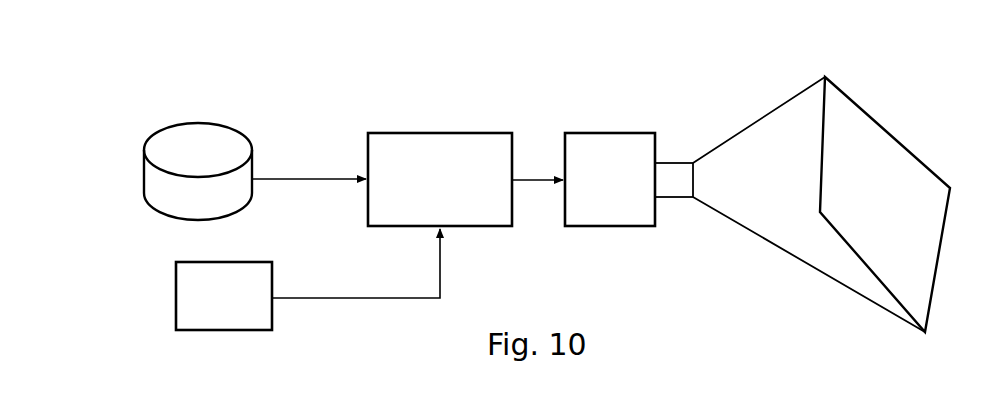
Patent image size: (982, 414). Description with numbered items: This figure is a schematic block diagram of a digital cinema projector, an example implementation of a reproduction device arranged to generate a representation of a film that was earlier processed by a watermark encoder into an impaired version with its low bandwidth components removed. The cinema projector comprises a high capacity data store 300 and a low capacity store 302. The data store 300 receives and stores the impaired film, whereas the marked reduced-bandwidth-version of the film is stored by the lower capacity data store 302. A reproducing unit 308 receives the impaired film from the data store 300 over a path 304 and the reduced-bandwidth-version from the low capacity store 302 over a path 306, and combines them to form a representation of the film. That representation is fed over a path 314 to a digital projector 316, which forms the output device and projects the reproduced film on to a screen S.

The high capacity data store 300 is at (198, 123).
The low capacity store 302 is at (225, 262).
The data signal path 304 is at (273, 178).
The control signal path 306 is at (340, 298).
The reproducing unit 308 is at (440, 133).
The image signal path 314 is at (533, 178).
The digital projector 316 is at (608, 133).
The screen S is at (886, 209).